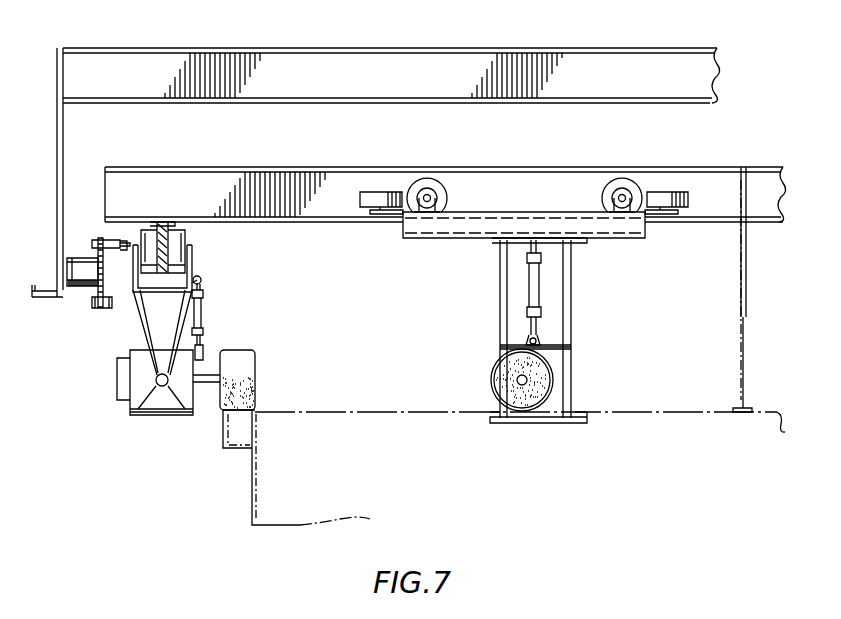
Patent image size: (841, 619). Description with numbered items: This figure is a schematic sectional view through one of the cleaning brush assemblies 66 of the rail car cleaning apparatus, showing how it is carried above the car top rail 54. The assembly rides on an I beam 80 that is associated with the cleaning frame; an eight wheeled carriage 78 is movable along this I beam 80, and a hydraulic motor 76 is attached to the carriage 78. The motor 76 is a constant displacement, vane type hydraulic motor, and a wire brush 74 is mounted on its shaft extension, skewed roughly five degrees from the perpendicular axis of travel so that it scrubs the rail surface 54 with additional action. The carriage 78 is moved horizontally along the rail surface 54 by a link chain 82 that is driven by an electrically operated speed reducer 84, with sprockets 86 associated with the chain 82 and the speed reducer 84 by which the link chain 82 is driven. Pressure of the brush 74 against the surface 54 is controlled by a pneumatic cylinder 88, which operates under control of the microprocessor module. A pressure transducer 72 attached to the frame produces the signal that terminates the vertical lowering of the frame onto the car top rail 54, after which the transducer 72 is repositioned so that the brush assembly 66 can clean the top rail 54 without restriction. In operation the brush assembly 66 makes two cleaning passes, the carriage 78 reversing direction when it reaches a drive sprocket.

The car top rail 54 is at (615, 412).
The cleaning brush assembly 66 is at (488, 342).
The pressure transducer 72 is at (750, 272).
The wire brush 74 is at (500, 380).
The hydraulic motor 76 is at (174, 415).
The eight wheeled carriage 78 is at (427, 180).
The I beam 80 is at (328, 172).
The link chain 82 is at (95, 242).
The speed reducer 84 is at (190, 245).
The sprocket 86 is at (108, 288).
The pneumatic cylinder 88 is at (527, 280).